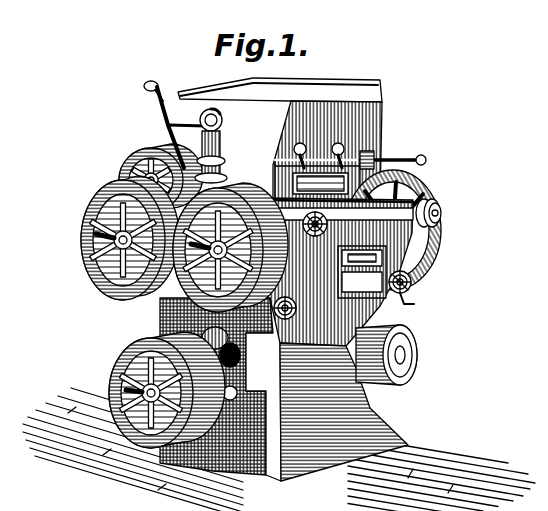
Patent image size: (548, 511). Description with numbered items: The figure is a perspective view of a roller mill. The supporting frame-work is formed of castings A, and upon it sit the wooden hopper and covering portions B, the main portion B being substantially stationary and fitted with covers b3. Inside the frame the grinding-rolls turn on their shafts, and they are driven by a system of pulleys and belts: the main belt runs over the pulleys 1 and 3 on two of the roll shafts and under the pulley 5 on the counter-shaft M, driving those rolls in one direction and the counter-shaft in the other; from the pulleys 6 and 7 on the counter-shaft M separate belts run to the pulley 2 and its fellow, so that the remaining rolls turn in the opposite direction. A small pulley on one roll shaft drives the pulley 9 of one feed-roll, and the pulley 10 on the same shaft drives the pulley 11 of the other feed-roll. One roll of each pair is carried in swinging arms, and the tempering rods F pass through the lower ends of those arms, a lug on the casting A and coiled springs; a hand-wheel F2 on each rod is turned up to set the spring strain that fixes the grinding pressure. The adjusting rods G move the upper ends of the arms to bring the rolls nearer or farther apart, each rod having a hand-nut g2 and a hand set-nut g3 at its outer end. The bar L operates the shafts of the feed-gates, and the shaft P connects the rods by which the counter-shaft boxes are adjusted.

The pulley 1 is at (230, 247).
The pulley 2 is at (402, 184).
The pulley 3 is at (130, 238).
The pulley 5 is at (146, 390).
The pulley 6 is at (372, 368).
The pulley 7 is at (386, 335).
The pulley 9 is at (119, 158).
The pulley 10 is at (151, 177).
The pulley 11 is at (224, 146).
The casting A is at (293, 389).
The hopper B is at (312, 152).
The cover b3 is at (336, 84).
The shaft P is at (177, 124).
The bar L is at (360, 142).
The adjusting rod G is at (451, 217).
The hand-nut g2 is at (432, 199).
The hand set-nut g3 is at (437, 207).
The tempering rod F is at (404, 278).
The hand-wheel F2 is at (399, 288).
The counter-shaft M is at (106, 372).